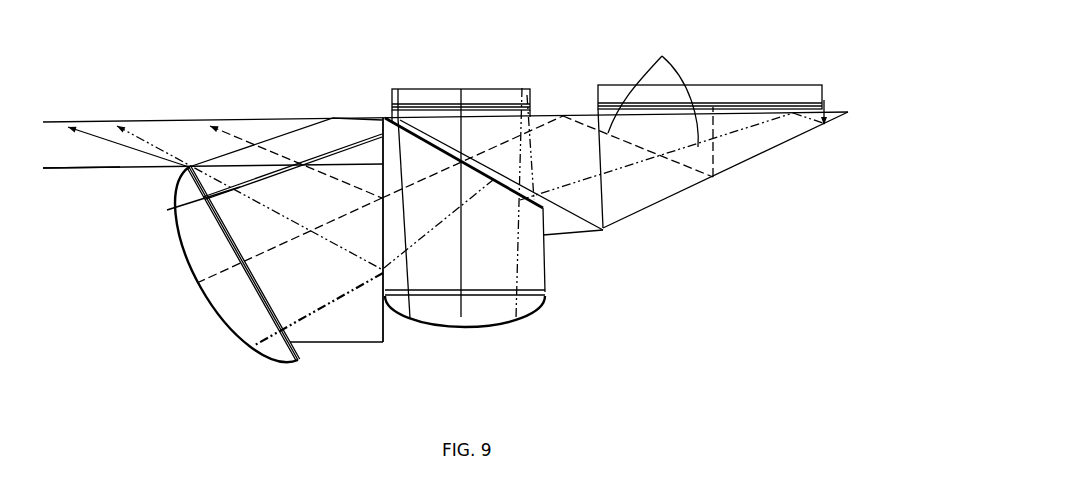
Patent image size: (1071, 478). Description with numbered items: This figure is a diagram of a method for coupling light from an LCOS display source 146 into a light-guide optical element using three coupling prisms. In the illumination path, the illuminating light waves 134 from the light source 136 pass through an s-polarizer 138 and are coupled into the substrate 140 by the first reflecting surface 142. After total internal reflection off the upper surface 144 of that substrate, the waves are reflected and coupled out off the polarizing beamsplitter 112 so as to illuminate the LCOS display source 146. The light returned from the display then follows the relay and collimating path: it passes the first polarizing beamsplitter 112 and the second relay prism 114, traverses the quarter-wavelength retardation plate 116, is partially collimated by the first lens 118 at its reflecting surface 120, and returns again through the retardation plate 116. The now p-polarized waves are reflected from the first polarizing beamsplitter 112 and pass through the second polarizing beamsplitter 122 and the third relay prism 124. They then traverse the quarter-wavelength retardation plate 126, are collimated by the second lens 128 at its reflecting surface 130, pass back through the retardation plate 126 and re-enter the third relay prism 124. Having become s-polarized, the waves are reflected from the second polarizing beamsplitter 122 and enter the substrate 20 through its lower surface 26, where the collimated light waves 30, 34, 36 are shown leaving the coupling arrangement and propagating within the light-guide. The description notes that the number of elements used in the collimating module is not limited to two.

The substrate 20 is at (86, 152).
The lower surface 26 is at (43, 168).
The light ray 30 is at (237, 130).
The light ray 34 is at (68, 126).
The light ray 36 is at (117, 124).
The first polarizing beamsplitter 112 is at (545, 247).
The second relay prism 114 is at (532, 263).
The quarter-wavelength retardation plate 116 is at (548, 292).
The first lens 118 is at (420, 313).
The reflecting surface 120 is at (477, 327).
The second polarizing beamsplitter 122 is at (383, 252).
The third relay prism 124 is at (350, 320).
The quarter-wavelength retardation plate 126 is at (297, 362).
The second lens 128 is at (248, 310).
The reflecting surface 130 is at (200, 305).
The illuminating light waves 134 is at (653, 93).
The light source 136 is at (710, 85).
The s-polarizer 138 is at (824, 100).
The substrate 140 is at (650, 192).
The first reflecting surface 142 is at (745, 162).
The upper surface 144 is at (580, 116).
The LCOS display source 146 is at (488, 88).